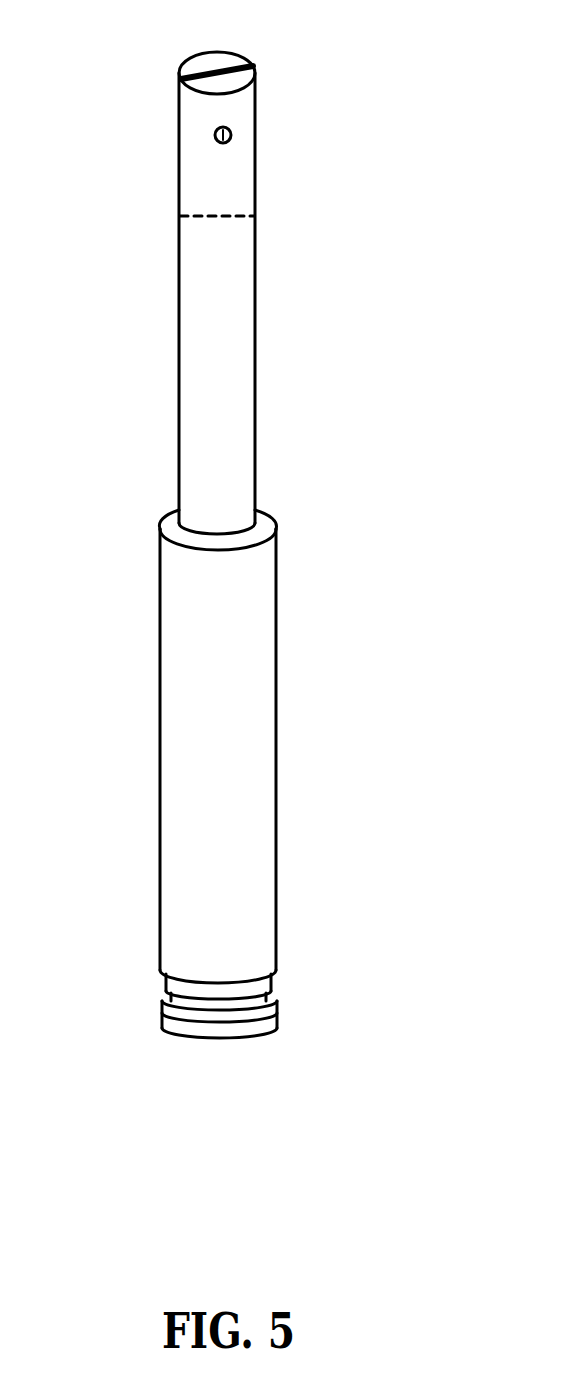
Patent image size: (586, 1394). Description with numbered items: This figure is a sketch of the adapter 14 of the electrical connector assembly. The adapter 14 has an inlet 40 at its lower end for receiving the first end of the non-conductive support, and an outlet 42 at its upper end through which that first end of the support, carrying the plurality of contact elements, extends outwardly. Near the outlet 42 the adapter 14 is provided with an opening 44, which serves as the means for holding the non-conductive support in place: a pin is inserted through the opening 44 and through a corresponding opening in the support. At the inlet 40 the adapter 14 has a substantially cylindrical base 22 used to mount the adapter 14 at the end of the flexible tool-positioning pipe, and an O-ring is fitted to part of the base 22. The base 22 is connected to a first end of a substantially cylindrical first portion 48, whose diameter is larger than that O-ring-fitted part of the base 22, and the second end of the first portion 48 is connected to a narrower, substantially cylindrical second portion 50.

The adapter 14 is at (291, 560).
The base 22 is at (265, 998).
The inlet 40 is at (213, 1050).
The outlet 42 is at (228, 57).
The opening 44 is at (228, 140).
The first portion 48 is at (280, 722).
The second portion 50 is at (232, 419).